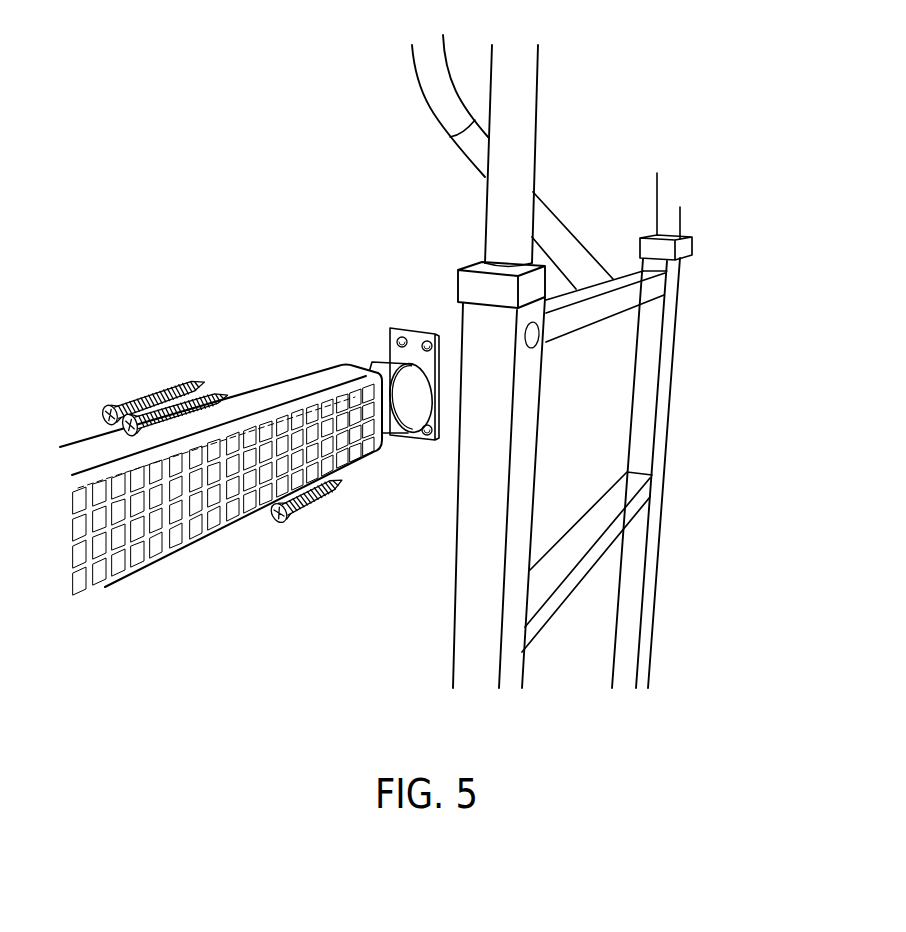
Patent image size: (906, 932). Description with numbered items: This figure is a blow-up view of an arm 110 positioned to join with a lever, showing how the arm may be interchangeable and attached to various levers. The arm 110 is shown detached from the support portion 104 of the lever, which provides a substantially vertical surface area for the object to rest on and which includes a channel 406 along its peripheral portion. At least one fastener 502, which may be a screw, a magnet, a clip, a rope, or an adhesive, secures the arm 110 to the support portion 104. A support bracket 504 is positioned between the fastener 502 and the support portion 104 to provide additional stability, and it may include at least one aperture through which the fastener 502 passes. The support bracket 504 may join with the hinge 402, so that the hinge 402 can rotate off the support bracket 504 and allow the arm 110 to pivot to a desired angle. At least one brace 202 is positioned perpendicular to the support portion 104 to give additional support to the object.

The support portion 104 is at (468, 267).
The at least one arm 110 is at (285, 381).
The at least one brace 202 is at (578, 538).
The hinge 402 is at (384, 362).
The channel 406 is at (472, 607).
The at least one fastener 502 is at (183, 391).
The support bracket 504 is at (407, 437).